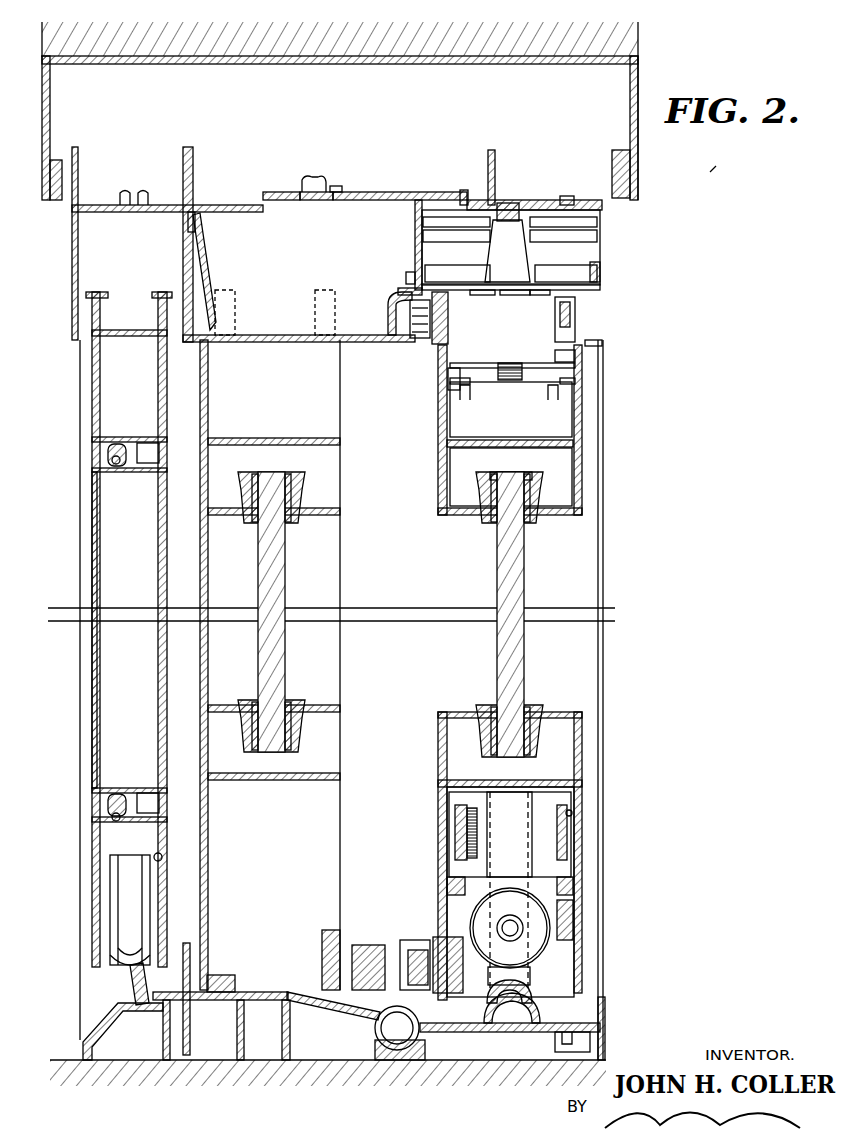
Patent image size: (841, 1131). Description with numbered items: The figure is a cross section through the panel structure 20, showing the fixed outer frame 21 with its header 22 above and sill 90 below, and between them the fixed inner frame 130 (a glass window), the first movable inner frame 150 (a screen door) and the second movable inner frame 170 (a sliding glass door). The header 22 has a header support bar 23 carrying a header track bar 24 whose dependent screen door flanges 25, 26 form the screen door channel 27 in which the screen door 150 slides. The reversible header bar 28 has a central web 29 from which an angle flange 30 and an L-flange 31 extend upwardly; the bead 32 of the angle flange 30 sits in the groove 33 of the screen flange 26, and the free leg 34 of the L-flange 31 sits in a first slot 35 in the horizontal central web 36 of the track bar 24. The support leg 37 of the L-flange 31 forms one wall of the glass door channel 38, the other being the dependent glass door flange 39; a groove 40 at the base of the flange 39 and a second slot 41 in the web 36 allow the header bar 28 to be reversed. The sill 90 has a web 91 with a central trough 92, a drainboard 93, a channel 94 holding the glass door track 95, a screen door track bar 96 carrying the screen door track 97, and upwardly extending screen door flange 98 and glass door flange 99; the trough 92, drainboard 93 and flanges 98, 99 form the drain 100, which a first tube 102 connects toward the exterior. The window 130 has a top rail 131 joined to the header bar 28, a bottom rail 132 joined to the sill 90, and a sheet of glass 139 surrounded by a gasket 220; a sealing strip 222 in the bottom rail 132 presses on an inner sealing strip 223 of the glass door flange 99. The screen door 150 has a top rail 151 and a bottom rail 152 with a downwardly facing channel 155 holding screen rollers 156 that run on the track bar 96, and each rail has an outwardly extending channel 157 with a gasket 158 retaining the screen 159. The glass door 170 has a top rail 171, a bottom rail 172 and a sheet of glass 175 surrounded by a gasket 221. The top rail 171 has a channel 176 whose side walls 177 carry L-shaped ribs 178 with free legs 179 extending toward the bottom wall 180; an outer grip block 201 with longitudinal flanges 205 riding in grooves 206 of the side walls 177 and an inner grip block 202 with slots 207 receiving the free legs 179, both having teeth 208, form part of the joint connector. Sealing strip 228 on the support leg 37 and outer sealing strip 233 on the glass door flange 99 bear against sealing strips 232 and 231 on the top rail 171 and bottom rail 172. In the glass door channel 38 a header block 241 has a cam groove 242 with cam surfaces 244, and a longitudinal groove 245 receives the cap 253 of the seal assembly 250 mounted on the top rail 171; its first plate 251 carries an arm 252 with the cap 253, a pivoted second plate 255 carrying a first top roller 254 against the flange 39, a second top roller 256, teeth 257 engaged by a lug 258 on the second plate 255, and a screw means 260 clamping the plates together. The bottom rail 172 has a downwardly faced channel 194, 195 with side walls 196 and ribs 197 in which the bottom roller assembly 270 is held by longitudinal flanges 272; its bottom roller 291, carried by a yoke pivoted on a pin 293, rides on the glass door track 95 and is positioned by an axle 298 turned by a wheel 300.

The panel structure 20 is at (712, 170).
The fixed outer frame 21 is at (470, 50).
The header 22 is at (650, 68).
The header support bar 23 is at (600, 60).
The header track bar 24 is at (388, 183).
The screen door flange 25 is at (72, 270).
The inner screen door flange 26 is at (183, 274).
The screen door channel 27 is at (106, 232).
The reversible header bar 28 is at (292, 260).
The central web 29 is at (268, 338).
The angle flange 30 is at (208, 280).
The L-flange 31 is at (415, 246).
The bead 32 is at (197, 222).
The groove 33 is at (190, 212).
The free leg 34 is at (445, 195).
The first slot 35 is at (466, 198).
The horizontal central web 36 is at (298, 188).
The support leg 37 is at (406, 278).
The glass door channel 38 is at (608, 322).
The glass door flange 39 is at (608, 292).
The groove 40 is at (608, 217).
The second slot 41 is at (340, 196).
The sill 90 is at (262, 1052).
The sill web 91 is at (300, 1054).
The central longitudinal trough 92 is at (410, 1040).
The drainboard 93 is at (326, 1014).
The channel 94 is at (528, 1046).
The glass door track 95 is at (548, 1024).
The screen door track bar 96 is at (140, 1052).
The screen door track 97 is at (133, 995).
The screen door flange 98 is at (188, 942).
The glass door flange 99 is at (398, 958).
The longitudinal drain 100 is at (278, 965).
The first tube 102 is at (383, 1016).
The fixed inner frame 130 is at (358, 710).
The top rail 131 is at (342, 418).
The bottom rail 132 is at (342, 828).
The sheet of glass 139 is at (287, 583).
The first movable inner frame 150 is at (84, 568).
The top rail 151 is at (92, 381).
The bottom rail 152 is at (92, 835).
The downwardly-facing channel 155 is at (162, 857).
The screen rollers 156 is at (118, 888).
The outwardly extending channel 157 is at (120, 444).
The gasket 158 is at (116, 464).
The screen 159 is at (92, 683).
The second movable inner frame 170 is at (610, 580).
The top rail 171 is at (585, 480).
The bottom rail 172 is at (582, 856).
The sheet of glass 175 is at (520, 590).
The channel 176 is at (565, 432).
The side walls 177 is at (440, 431).
The longitudinal ribs 178 is at (440, 398).
The free leg 179 is at (470, 395).
The bottom wall 180 is at (512, 446).
The downwardly faced longitudinal channel 194 is at (605, 836).
The bottom rail channel 195 is at (585, 942).
The side walls 196 is at (452, 838).
The longitudinal ribs 197 is at (450, 878).
The outer grip block 201 is at (420, 331).
The inner grip block 202 is at (468, 436).
The longitudinal flanges 205 is at (606, 351).
The grooves 206 is at (446, 376).
The slots 207 is at (550, 380).
The teeth 208 is at (612, 362).
The gasket 220 is at (288, 520).
The gasket 221 is at (532, 520).
The sealing strip 222 is at (326, 933).
The inner sealing strip 223 is at (370, 948).
The sealing strip 228 is at (395, 343).
The sealing strip 231 is at (447, 920).
The sealing strip 232 is at (450, 340).
The outer sealing strip 233 is at (414, 951).
The header block 241 is at (578, 210).
The cam groove 242 is at (545, 206).
The cam surfaces 244 is at (608, 234).
The longitudinal groove 245 is at (496, 200).
The seal assembly 250 is at (614, 252).
The first plate 251 is at (566, 263).
The arm 252 is at (540, 246).
The cap 253 is at (515, 212).
The first top roller 254 is at (608, 273).
The second plate 255 is at (513, 296).
The second top roller 256 is at (410, 290).
The teeth 257 is at (508, 318).
The lug 258 is at (468, 296).
The screw means 260 is at (486, 268).
The bottom roller assembly 270 is at (592, 790).
The longitudinal flanges 272 is at (605, 900).
The bottom roller 291 is at (492, 991).
The pin 293 is at (462, 822).
The axle 298 is at (605, 968).
The wheel 300 is at (605, 910).